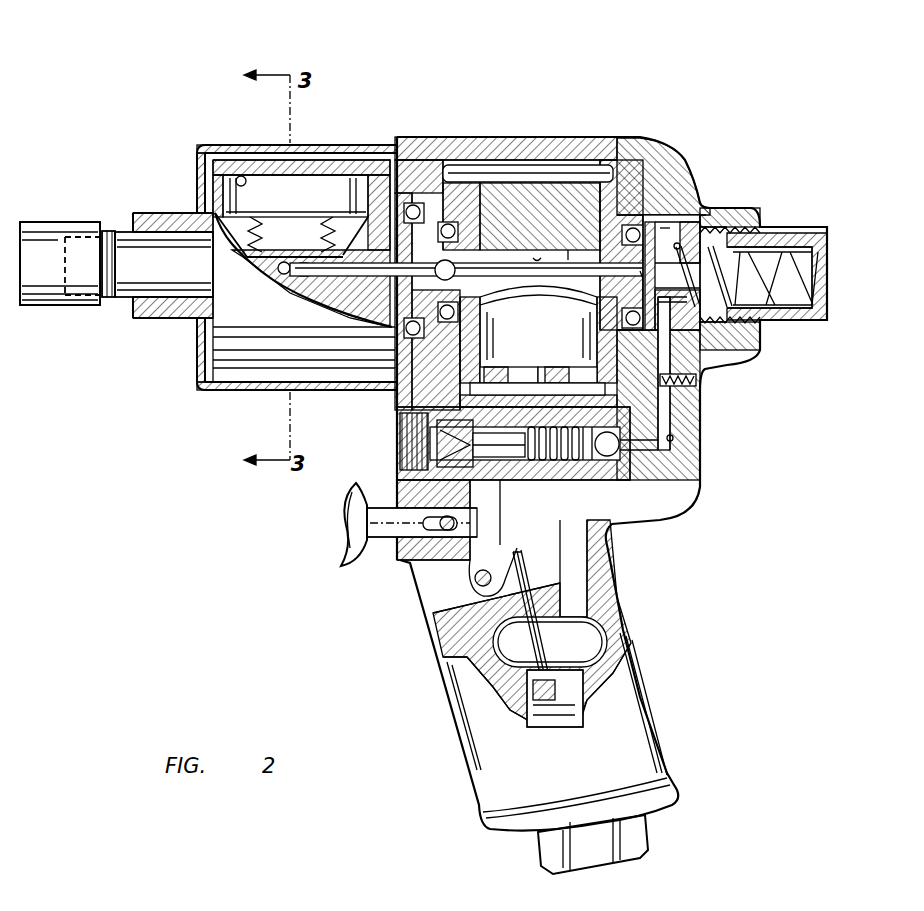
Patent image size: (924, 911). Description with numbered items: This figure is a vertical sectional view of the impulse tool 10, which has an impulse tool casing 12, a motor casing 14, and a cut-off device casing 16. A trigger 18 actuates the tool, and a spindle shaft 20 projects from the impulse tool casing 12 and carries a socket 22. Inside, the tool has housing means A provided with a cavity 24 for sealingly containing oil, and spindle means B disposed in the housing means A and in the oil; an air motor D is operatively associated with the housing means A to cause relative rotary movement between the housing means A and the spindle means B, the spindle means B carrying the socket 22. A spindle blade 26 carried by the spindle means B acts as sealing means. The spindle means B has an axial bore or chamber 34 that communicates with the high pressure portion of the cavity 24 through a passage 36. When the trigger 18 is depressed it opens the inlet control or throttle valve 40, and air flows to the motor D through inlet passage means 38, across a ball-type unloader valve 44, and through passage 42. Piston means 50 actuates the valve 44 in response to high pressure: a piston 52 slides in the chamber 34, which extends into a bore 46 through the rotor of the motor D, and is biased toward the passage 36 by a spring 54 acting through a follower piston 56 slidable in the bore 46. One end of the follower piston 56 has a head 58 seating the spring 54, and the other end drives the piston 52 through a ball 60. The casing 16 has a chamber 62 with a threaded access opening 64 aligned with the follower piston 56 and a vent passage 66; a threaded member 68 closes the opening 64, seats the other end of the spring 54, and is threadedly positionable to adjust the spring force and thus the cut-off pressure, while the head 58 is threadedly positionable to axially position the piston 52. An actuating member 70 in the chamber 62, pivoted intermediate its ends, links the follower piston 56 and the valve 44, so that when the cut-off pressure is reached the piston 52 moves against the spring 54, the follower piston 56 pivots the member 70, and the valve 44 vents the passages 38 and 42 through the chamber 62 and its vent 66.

The impulse tool 10 is at (522, 60).
The impulse tool casing 12 is at (317, 393).
The motor casing 14 is at (437, 137).
The cut-off device casing 16 is at (655, 160).
The trigger 18 is at (358, 523).
The spindle shaft 20 is at (109, 232).
The socket 22 is at (42, 222).
The cavity 24 is at (241, 176).
The spindle blade 26 is at (332, 186).
The axial bore or chamber 34 is at (305, 262).
The passage 36 is at (285, 262).
The inlet passage means 38 is at (588, 597).
The inlet control or throttle valve 40 is at (547, 727).
The passage 42 is at (507, 376).
The ball-type unloader valve 44 is at (557, 378).
The bore 46 is at (537, 262).
The piston means 50 is at (680, 244).
The piston 52 is at (316, 304).
The spring 54 is at (812, 246).
The follower piston 56 is at (573, 270).
The head 58 is at (660, 220).
The ball 60 is at (462, 266).
The chamber 62 is at (674, 441).
The threaded access opening 64 is at (718, 226).
The vent passage 66 is at (656, 495).
The threaded member 68 is at (782, 246).
The actuating member 70 is at (660, 412).
The housing means A is at (253, 349).
The spindle means B is at (161, 257).
The air motor D is at (548, 210).